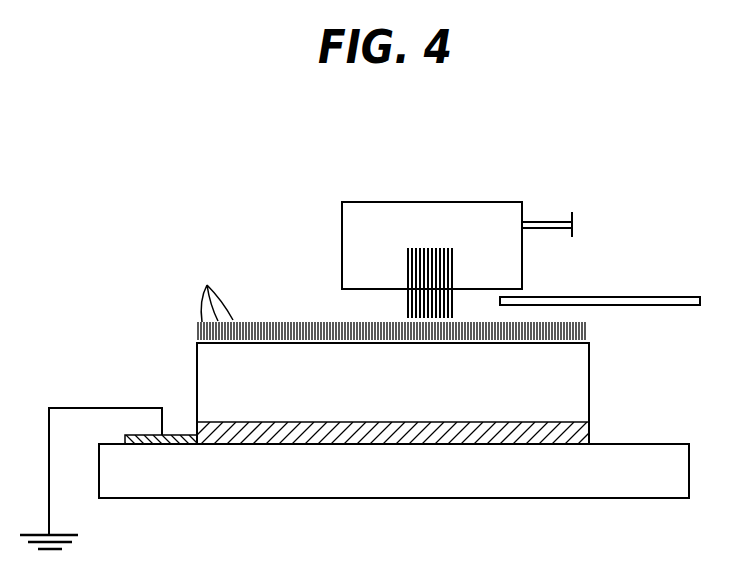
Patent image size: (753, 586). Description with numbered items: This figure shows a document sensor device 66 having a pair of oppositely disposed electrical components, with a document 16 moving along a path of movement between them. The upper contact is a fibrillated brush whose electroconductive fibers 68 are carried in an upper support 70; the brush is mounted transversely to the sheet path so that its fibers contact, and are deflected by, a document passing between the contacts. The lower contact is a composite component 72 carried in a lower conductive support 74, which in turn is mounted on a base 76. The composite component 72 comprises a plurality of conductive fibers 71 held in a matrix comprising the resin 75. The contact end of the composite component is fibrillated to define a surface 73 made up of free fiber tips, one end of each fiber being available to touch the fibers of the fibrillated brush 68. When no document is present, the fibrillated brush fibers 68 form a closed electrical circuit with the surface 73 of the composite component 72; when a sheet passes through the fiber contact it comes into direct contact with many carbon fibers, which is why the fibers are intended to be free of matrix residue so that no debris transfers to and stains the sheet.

The document 16 is at (660, 297).
The document sensor device 66 is at (534, 260).
The electroconductive fibers 68 is at (408, 308).
The upper support 70 is at (380, 202).
The conductive fibers 71 is at (213, 289).
The composite component 72 is at (457, 350).
The surface 73 is at (560, 322).
The lower conductive support 74 is at (587, 431).
The resin 75 is at (587, 369).
The base 76 is at (383, 498).